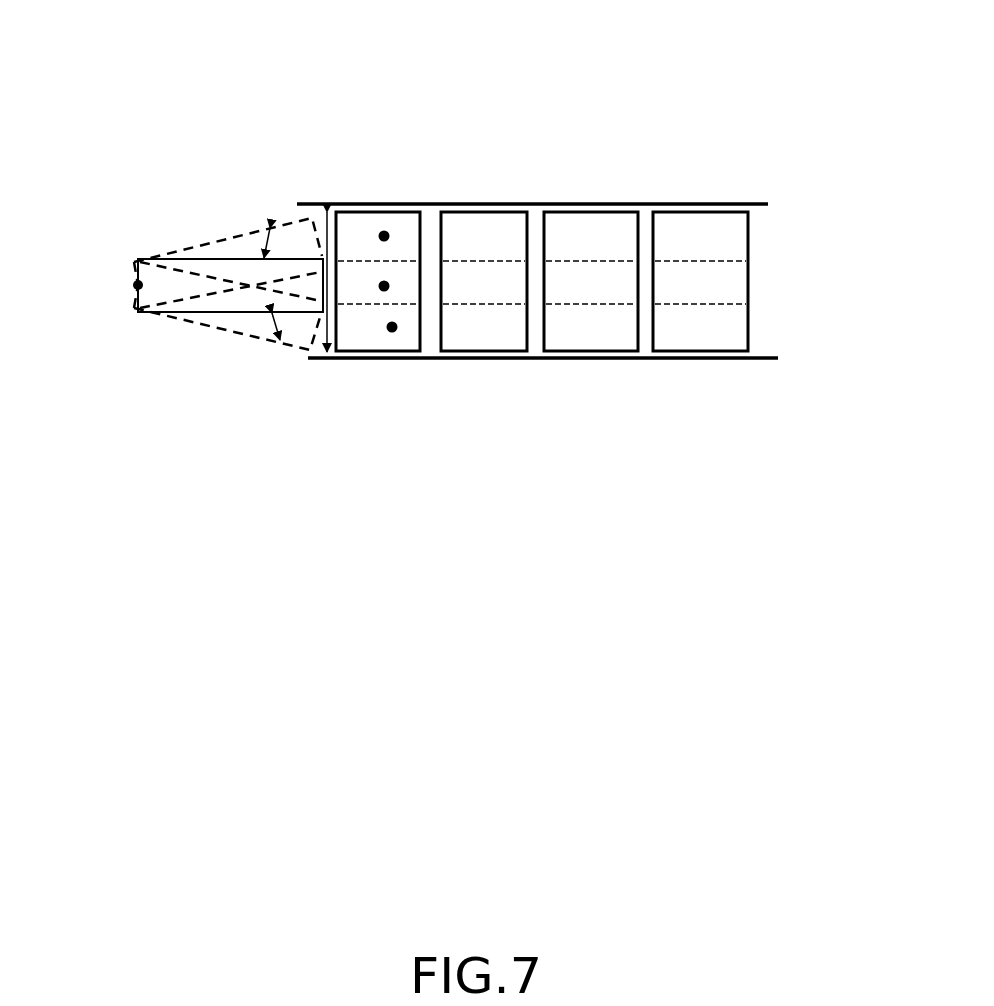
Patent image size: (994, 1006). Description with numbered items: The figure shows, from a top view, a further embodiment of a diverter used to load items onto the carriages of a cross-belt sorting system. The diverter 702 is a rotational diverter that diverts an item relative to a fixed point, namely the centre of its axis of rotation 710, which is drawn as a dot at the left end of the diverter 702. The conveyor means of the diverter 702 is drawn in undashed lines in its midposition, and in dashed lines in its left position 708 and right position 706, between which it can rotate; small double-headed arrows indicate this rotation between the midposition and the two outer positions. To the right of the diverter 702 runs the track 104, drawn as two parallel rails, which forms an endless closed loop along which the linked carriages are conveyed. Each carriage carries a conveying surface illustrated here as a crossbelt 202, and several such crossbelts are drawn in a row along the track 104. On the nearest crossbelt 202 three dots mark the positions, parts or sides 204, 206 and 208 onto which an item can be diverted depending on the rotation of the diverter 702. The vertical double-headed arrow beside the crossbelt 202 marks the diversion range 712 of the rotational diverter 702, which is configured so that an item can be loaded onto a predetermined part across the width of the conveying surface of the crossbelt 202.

The track 104 is at (703, 202).
The crossbelt 202 is at (364, 211).
The position on the conveying surface 204 is at (384, 236).
The position on the conveying surface 206 is at (384, 286).
The position on the conveying surface 208 is at (392, 327).
The rotational diverter 702 is at (200, 313).
The right position 706 is at (232, 335).
The left position 708 is at (215, 240).
The axis of rotation 710 is at (132, 284).
The diversion range 712 is at (323, 360).